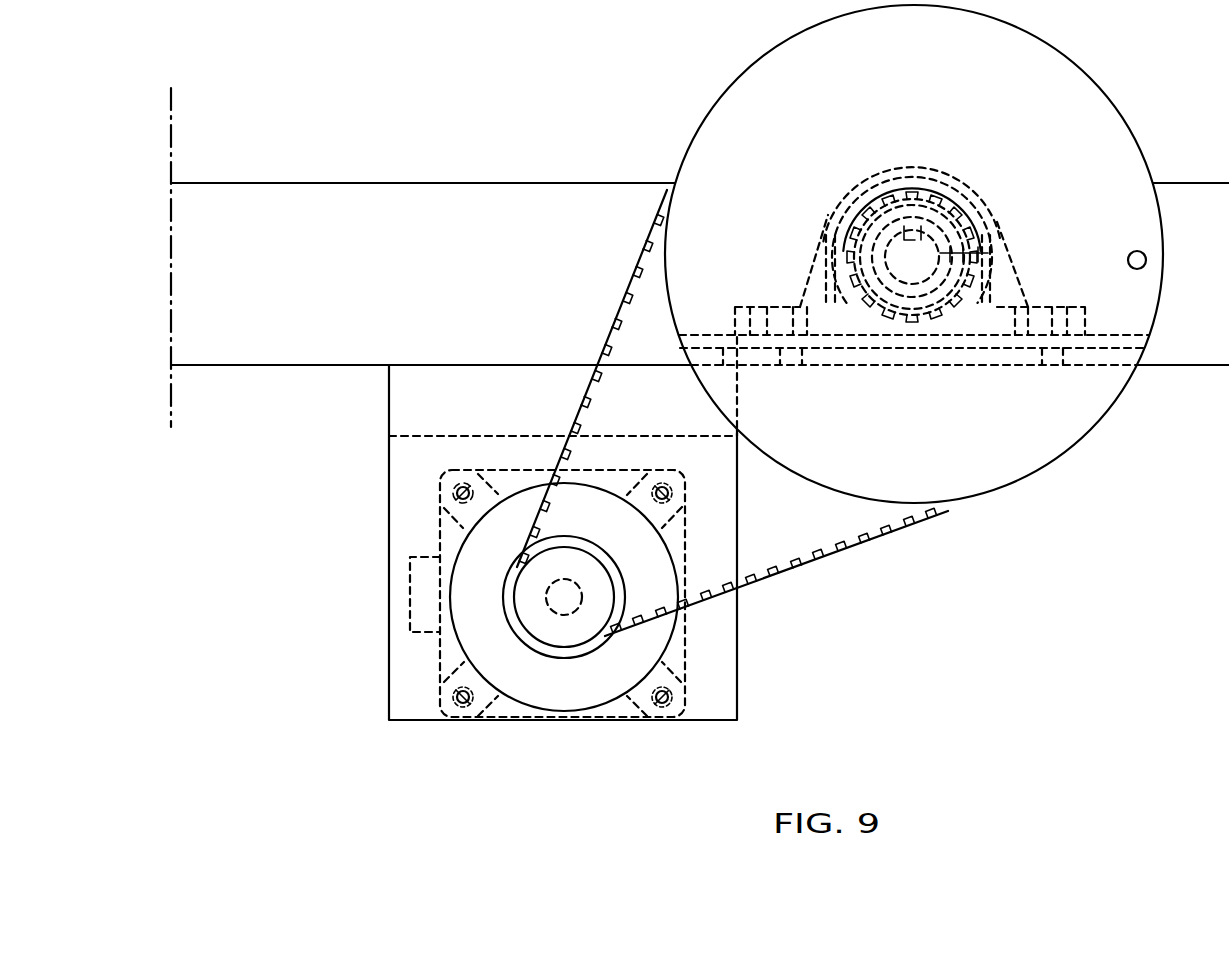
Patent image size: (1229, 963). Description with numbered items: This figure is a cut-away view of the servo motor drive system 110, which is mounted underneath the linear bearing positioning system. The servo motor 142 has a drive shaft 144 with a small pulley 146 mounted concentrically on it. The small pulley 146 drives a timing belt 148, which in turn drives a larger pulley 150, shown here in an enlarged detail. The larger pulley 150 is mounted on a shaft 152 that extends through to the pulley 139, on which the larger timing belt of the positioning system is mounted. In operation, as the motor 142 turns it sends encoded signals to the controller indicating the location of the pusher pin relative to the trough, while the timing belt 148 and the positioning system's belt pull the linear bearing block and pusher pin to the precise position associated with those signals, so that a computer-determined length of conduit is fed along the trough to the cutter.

The servo motor drive system 110 is at (800, 663).
The pulley 139 is at (977, 302).
The motor 142 is at (525, 712).
The drive shaft 144 is at (546, 598).
The small pulley 146 is at (563, 647).
The timing belt 148 is at (817, 560).
The larger pulley 150 is at (1078, 442).
The shaft 152 is at (975, 254).